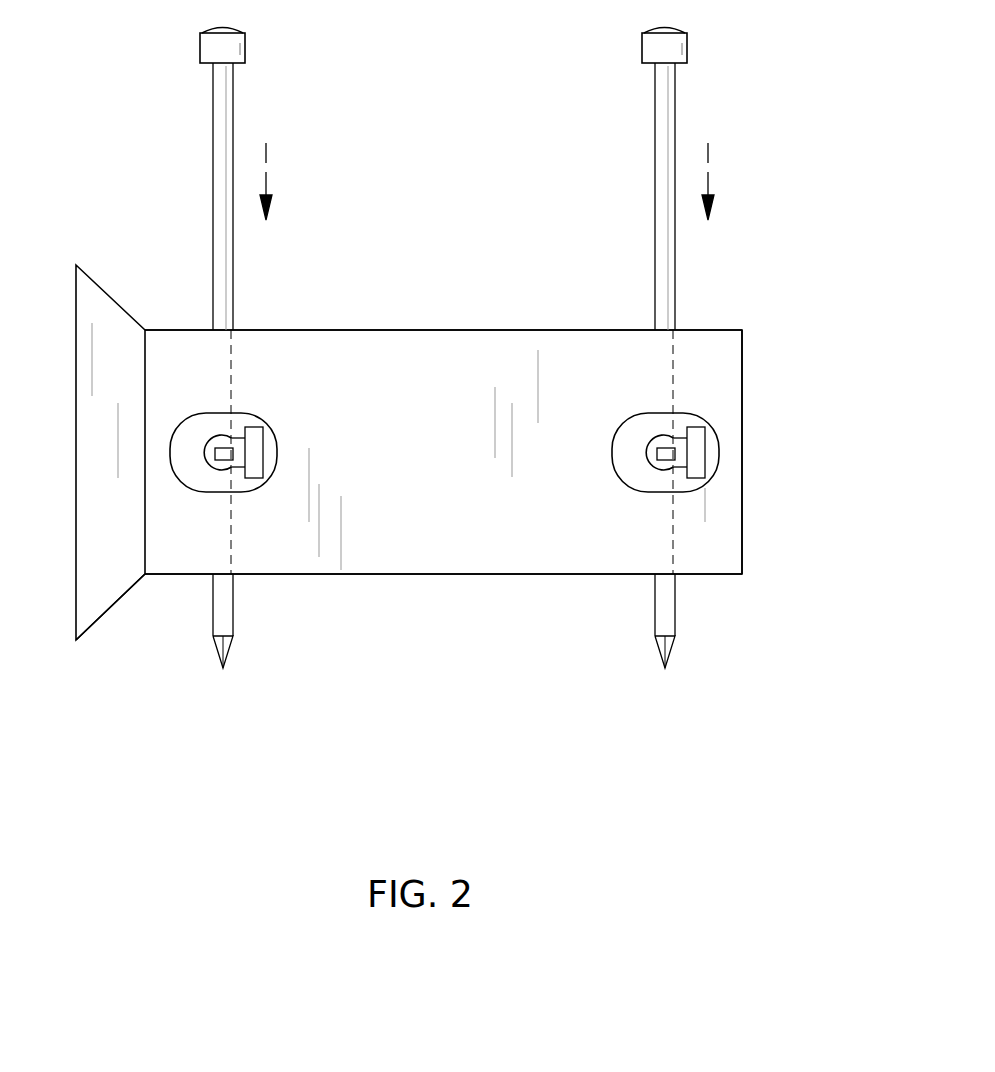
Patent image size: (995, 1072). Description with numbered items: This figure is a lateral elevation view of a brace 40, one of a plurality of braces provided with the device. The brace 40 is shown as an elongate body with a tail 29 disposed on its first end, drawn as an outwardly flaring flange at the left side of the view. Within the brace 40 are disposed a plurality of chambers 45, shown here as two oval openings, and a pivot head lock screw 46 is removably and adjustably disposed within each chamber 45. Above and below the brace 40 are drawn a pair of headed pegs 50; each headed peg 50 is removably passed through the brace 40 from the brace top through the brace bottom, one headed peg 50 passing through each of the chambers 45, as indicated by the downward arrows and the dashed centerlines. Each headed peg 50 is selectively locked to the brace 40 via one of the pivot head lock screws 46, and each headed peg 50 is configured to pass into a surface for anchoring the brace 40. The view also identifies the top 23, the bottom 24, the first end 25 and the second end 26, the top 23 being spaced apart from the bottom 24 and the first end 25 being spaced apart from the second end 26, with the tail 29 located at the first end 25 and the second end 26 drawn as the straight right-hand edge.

The top 23 is at (507, 330).
The bottom 24 is at (467, 574).
The first end 25 is at (62, 352).
The second end 26 is at (765, 370).
The tail 29 is at (112, 593).
The brace 40 is at (388, 340).
The chamber 45 is at (243, 413).
The pivot head lock screw 46 is at (235, 462).
The headed peg 50 is at (207, 43).